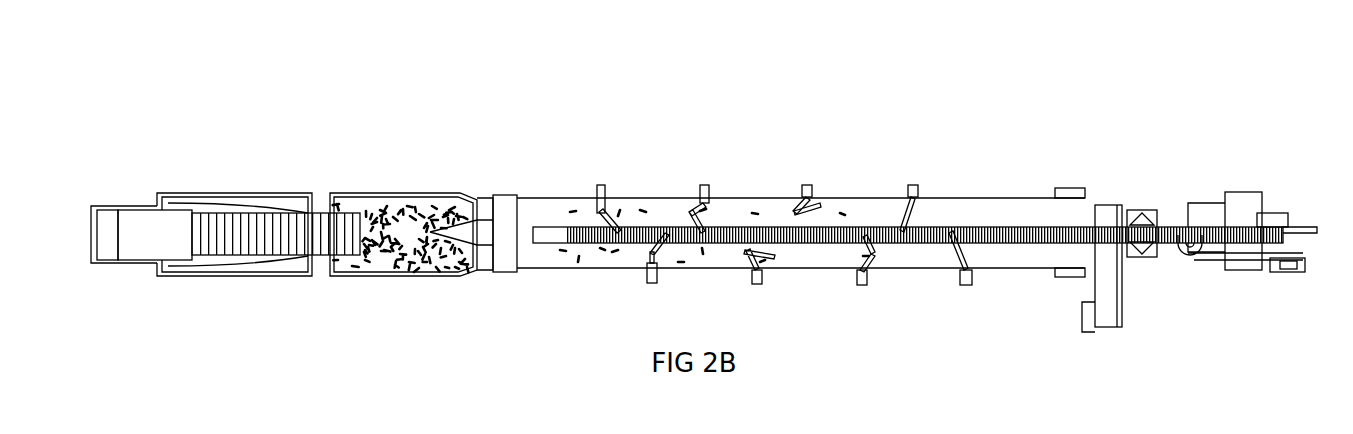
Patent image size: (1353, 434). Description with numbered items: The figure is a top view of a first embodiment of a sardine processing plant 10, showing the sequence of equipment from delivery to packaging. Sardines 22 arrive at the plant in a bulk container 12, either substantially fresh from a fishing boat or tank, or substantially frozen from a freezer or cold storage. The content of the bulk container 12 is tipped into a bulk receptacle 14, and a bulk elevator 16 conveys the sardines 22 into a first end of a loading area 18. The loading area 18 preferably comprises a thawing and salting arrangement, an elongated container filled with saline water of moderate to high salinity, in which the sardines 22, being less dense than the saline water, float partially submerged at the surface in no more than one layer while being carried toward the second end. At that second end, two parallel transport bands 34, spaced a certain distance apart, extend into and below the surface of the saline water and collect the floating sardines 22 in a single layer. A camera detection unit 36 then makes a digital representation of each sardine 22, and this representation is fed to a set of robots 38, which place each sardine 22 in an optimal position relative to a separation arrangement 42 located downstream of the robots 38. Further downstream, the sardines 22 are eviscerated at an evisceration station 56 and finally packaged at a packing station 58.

The sardine processing plant 10 is at (122, 135).
The bulk container 12 is at (175, 222).
The bulk receptacle 14 is at (272, 202).
The bulk elevator 16 is at (322, 230).
The loading area 18 is at (367, 202).
The sardines 22 is at (413, 202).
The transport bands 34 is at (542, 255).
The camera detection unit 36 is at (505, 195).
The robots 38 is at (602, 185).
The separation arrangement 42 is at (1108, 215).
The evisceration station 56 is at (1149, 212).
The packing station 58 is at (1230, 172).